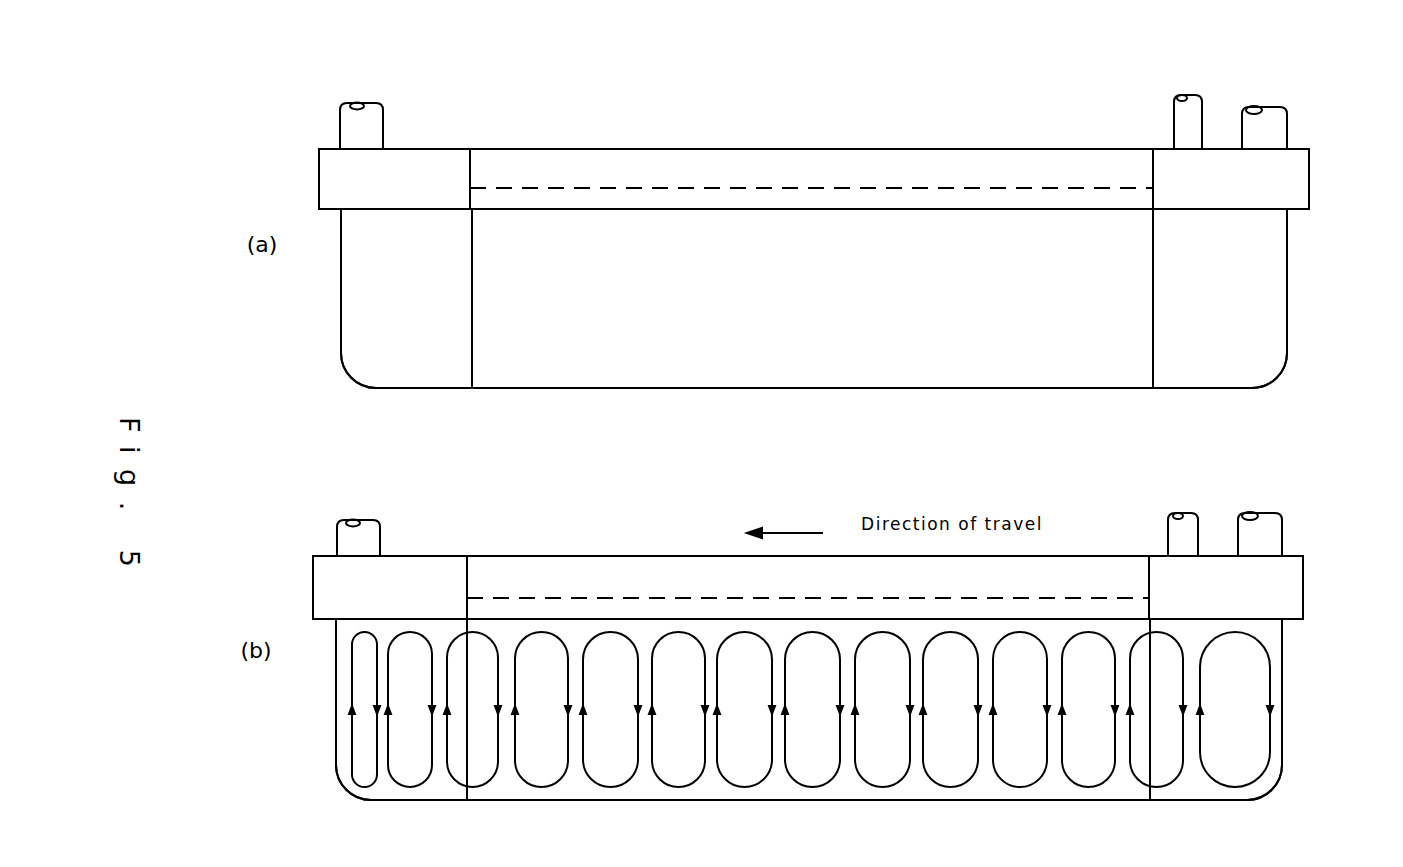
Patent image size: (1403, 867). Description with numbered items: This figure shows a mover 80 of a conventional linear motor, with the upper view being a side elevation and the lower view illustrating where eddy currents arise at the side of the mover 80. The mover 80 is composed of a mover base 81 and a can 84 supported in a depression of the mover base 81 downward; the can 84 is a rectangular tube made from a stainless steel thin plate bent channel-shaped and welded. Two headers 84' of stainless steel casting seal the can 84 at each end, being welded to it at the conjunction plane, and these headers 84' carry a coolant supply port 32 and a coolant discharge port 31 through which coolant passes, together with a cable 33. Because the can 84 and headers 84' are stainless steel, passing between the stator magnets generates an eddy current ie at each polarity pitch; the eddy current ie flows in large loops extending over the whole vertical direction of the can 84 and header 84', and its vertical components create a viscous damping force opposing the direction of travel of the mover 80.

The coolant discharge port 31 is at (346, 124).
The coolant supply port 32 is at (1268, 125).
The cable 33 is at (1185, 118).
The mover 80 is at (795, 136).
The mover base 81 is at (612, 158).
The can 84 is at (811, 532).
The header 84' is at (816, 565).
The eddy current ie is at (546, 787).